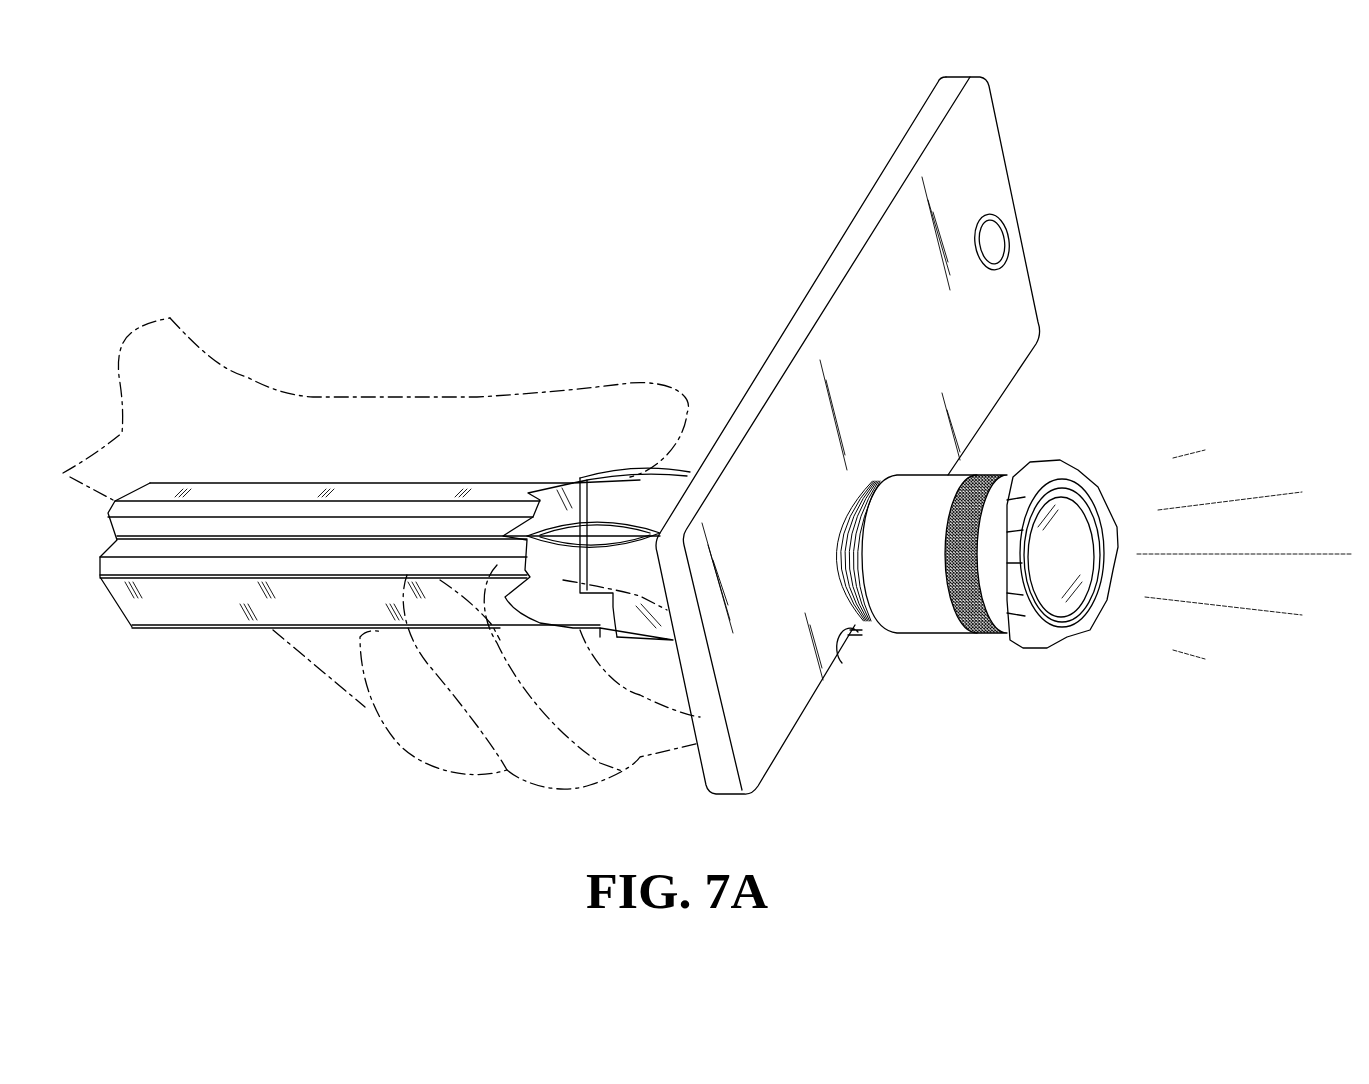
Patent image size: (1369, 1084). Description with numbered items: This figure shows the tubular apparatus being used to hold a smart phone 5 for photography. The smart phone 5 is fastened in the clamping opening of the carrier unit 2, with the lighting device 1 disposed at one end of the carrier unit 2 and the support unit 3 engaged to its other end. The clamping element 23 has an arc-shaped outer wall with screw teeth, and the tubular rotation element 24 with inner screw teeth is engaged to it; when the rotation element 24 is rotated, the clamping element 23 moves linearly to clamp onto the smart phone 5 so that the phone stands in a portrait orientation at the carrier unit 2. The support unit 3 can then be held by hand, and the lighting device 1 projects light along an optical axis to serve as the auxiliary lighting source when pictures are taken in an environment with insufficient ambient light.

The lighting device 1 is at (1068, 527).
The carrier unit 2 is at (893, 750).
The clamping element 23 is at (857, 628).
The rotation element 24 is at (930, 607).
The support unit 3 is at (665, 505).
The smart phone 5 is at (985, 135).